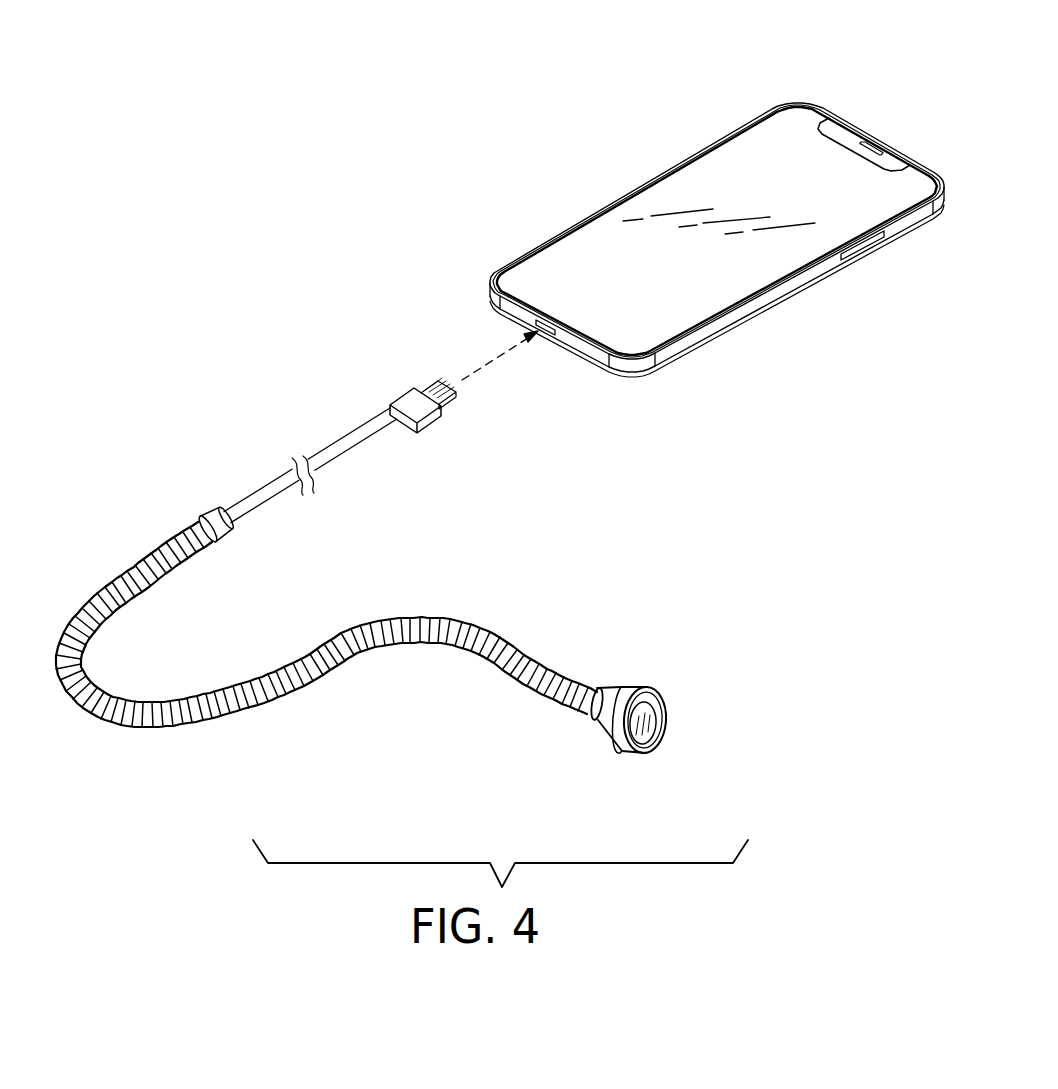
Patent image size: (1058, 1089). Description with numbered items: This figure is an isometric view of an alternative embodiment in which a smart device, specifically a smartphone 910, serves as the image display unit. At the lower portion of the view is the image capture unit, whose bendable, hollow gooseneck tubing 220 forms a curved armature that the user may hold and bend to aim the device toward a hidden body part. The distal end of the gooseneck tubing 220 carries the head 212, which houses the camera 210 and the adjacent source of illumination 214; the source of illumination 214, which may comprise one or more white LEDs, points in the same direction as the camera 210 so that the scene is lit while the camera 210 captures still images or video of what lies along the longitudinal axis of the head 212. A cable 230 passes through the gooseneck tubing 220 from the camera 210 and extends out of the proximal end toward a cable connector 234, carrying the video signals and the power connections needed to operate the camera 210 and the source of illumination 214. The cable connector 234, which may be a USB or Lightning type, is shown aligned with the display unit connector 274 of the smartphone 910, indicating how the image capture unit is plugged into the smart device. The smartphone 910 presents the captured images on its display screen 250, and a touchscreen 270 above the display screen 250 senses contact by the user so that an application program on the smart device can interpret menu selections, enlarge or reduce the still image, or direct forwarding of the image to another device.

The camera 210 is at (660, 737).
The head 212 is at (679, 684).
The source of illumination 214 is at (663, 700).
The gooseneck tubing 220 is at (143, 727).
The cable 230 is at (257, 491).
The cable connector 234 is at (419, 426).
The display screen 250 is at (580, 260).
The touchscreen 270 is at (650, 207).
The display unit connector 274 is at (542, 333).
The smartphone 910 is at (717, 141).